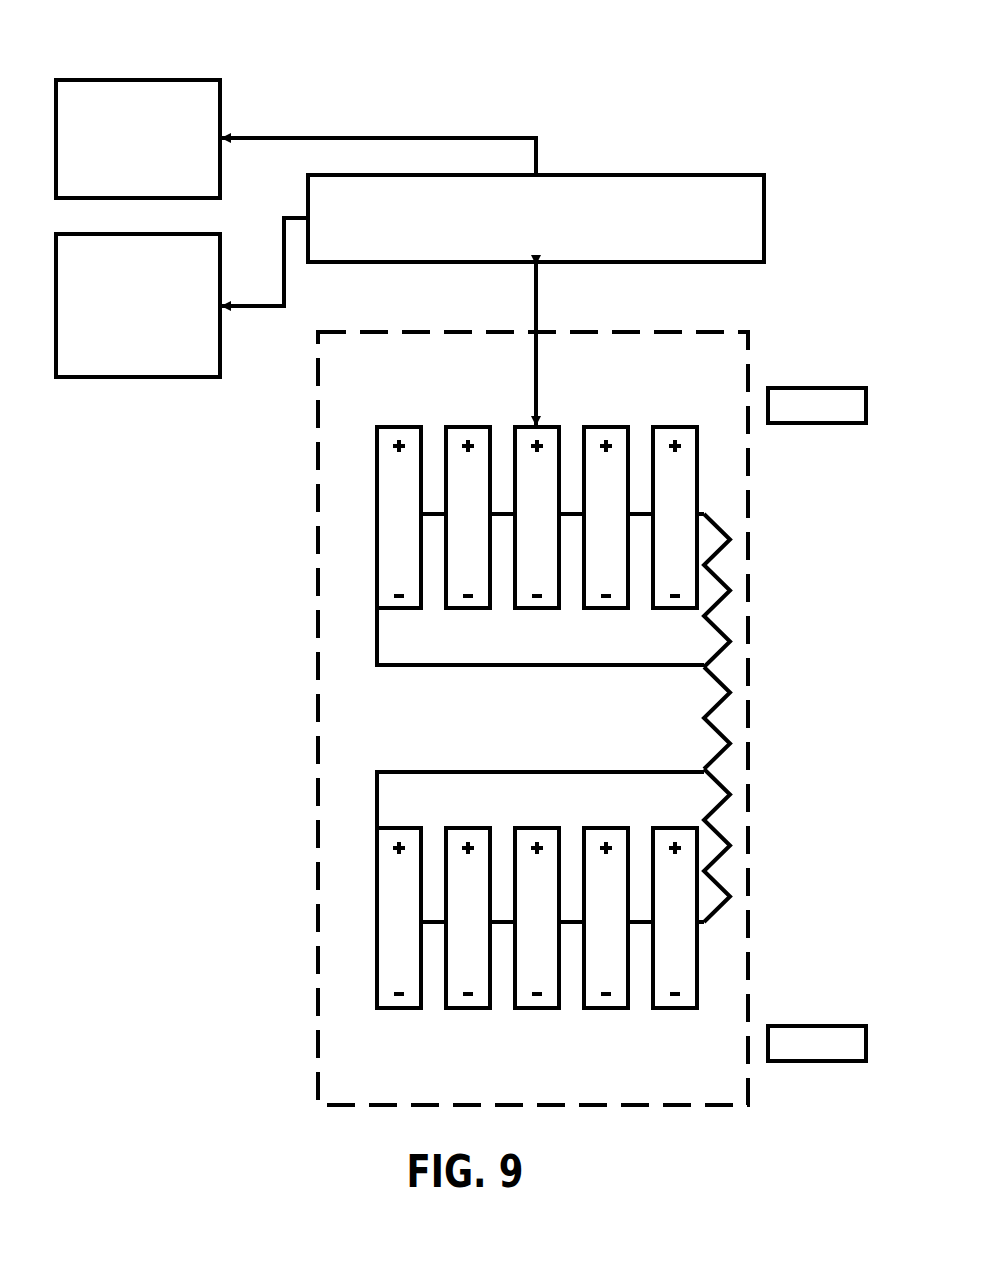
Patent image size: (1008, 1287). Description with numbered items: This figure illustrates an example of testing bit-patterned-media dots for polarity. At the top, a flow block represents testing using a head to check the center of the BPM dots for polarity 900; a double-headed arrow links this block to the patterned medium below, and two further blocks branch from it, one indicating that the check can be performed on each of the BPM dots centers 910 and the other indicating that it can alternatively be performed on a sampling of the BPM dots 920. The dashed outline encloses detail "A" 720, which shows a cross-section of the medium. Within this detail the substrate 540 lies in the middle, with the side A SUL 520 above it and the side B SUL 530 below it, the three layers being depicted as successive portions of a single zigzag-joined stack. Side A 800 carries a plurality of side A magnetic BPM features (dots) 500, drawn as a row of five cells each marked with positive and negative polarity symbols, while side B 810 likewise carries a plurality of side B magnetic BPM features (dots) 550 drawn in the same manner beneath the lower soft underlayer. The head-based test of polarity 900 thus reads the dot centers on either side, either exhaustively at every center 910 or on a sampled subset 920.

The testing using a head to check the center of the BPM dots for polarity 900 is at (752, 218).
The each of BPM dots centers 910 is at (71, 95).
The sampling of the BPM dots 920 is at (200, 366).
The detail "A" 720 is at (722, 332).
The side A 800 is at (856, 402).
The side B 810 is at (856, 1050).
The side A magnetic BPM features (dots) 500 is at (470, 553).
The side B magnetic BPM features (dots) 550 is at (470, 967).
The side A SUL 520 is at (690, 643).
The substrate 540 is at (683, 735).
The side B SUL 530 is at (688, 797).